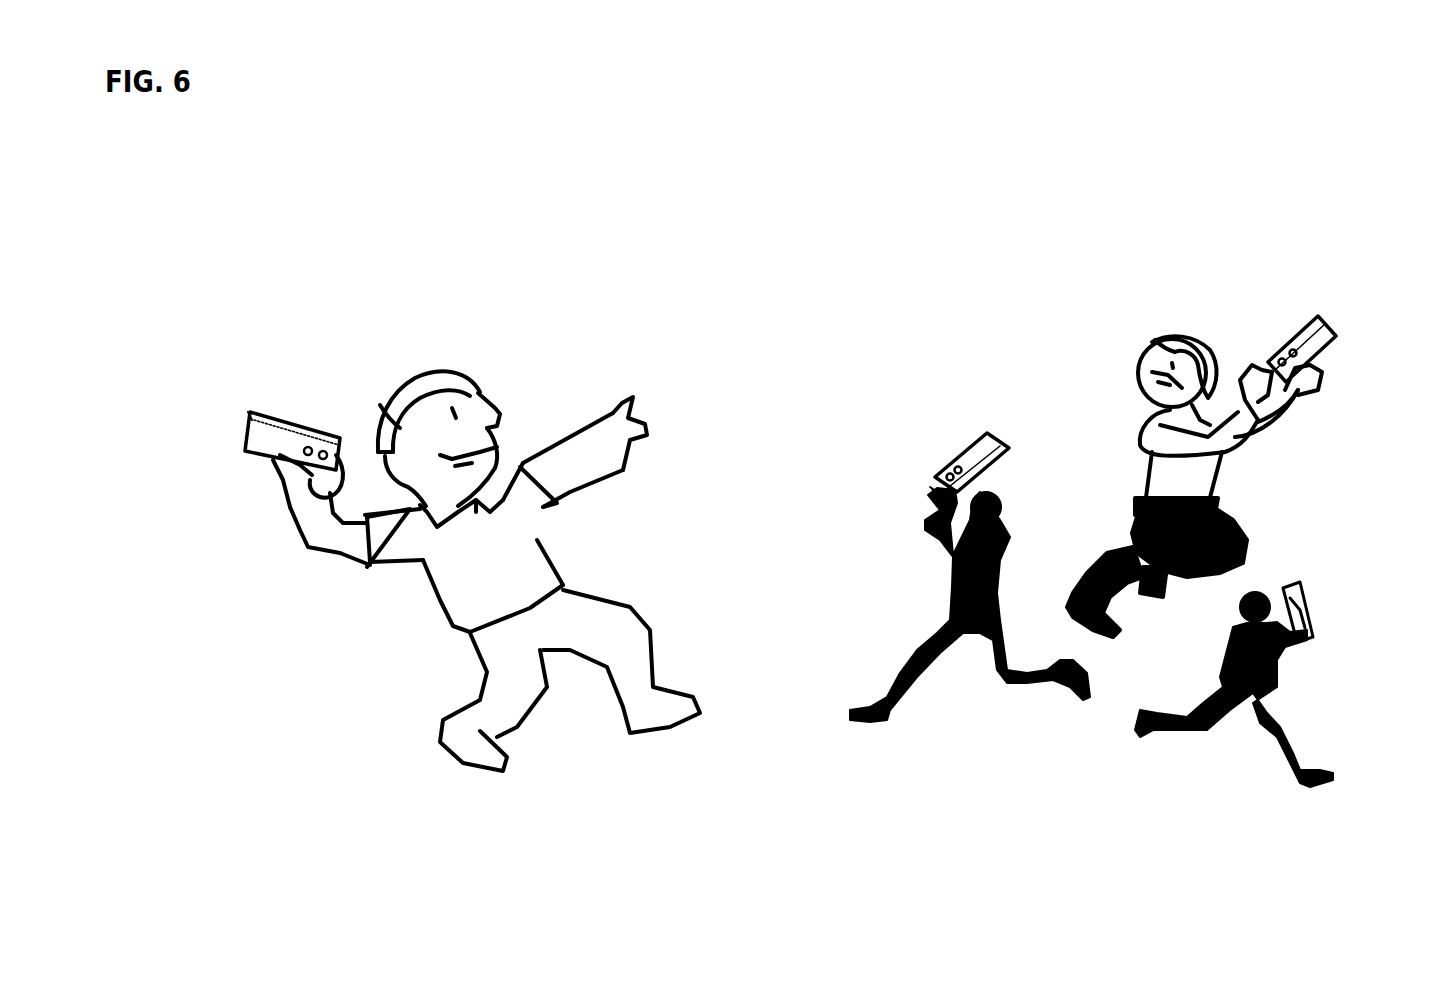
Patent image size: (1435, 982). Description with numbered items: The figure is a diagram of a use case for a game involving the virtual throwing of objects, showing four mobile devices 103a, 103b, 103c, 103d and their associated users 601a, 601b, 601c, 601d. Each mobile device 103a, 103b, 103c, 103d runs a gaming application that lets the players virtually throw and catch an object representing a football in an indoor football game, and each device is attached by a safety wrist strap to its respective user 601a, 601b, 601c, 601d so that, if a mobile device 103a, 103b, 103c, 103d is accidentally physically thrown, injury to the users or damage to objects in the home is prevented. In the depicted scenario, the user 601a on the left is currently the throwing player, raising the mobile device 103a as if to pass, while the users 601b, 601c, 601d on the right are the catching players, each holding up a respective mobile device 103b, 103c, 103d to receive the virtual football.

The mobile device 103a is at (242, 452).
The mobile device 103b is at (1330, 325).
The mobile device 103c is at (1005, 455).
The mobile device 103d is at (1303, 588).
The user 601a is at (437, 600).
The user 601b is at (1275, 450).
The user 601c is at (953, 563).
The user 601d is at (1228, 648).